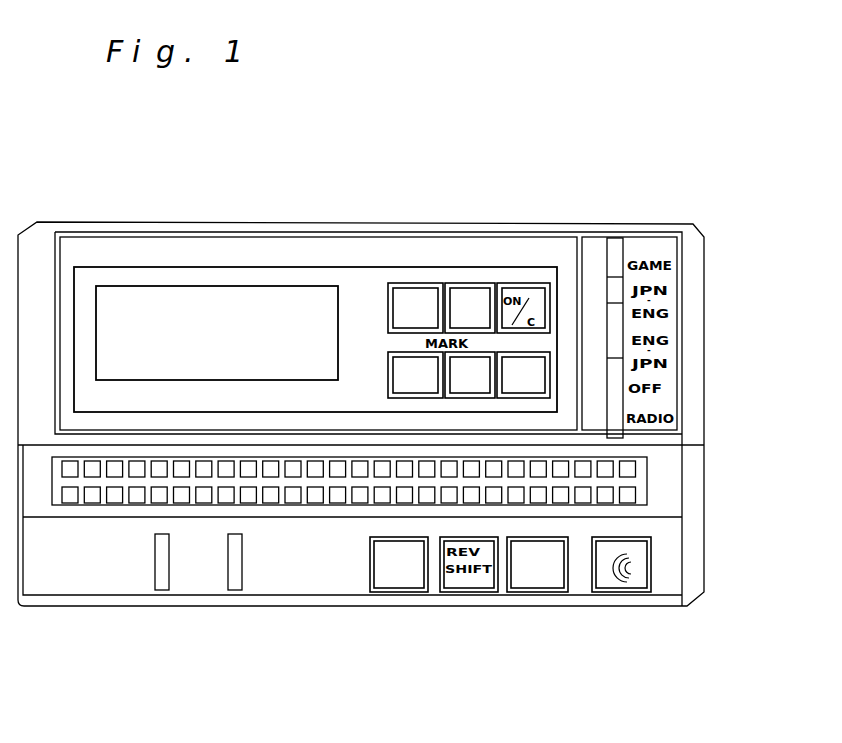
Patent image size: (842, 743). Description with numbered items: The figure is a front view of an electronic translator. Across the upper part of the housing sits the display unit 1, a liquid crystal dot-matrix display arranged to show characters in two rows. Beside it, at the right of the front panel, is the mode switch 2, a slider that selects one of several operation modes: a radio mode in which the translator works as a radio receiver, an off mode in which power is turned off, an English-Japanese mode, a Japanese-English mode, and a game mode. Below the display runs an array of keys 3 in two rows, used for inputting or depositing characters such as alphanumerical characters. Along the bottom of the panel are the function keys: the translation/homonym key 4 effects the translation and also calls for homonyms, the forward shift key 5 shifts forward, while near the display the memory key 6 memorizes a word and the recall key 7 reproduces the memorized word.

The display unit 1 is at (315, 302).
The mode switch 2 is at (613, 268).
The array of keys 3 is at (640, 483).
The translation/homonym key 4 is at (543, 582).
The forward shift key 5 is at (408, 582).
The memory key 6 is at (389, 372).
The recall key 7 is at (462, 396).